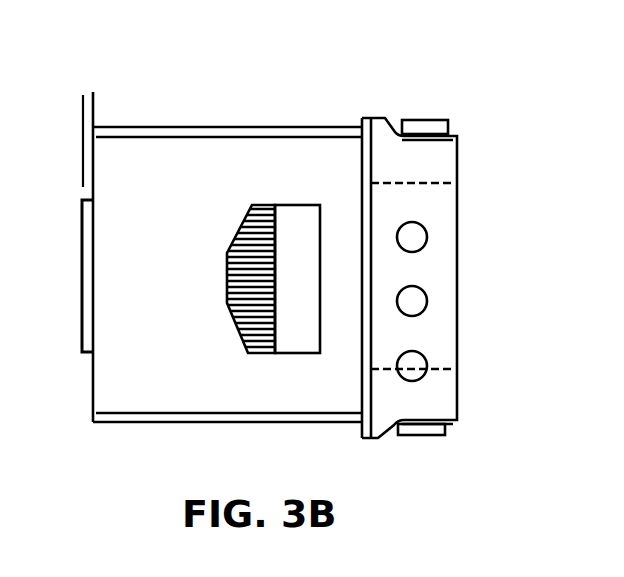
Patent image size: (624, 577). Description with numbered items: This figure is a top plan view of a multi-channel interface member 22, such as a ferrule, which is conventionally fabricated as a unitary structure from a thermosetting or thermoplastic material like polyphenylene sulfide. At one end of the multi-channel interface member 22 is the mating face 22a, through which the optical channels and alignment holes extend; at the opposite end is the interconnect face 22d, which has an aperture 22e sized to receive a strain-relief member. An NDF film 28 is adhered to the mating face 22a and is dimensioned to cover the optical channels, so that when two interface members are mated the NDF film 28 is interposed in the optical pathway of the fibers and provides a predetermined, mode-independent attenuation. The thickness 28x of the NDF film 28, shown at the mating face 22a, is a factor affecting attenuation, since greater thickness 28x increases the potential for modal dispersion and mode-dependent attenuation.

The multi-channel interface member 22 is at (290, 79).
The mating face 22a is at (88, 390).
The interconnect face 22d is at (458, 162).
The aperture 22e is at (441, 363).
The NDF film 28 is at (85, 313).
The thickness 28x is at (135, 103).